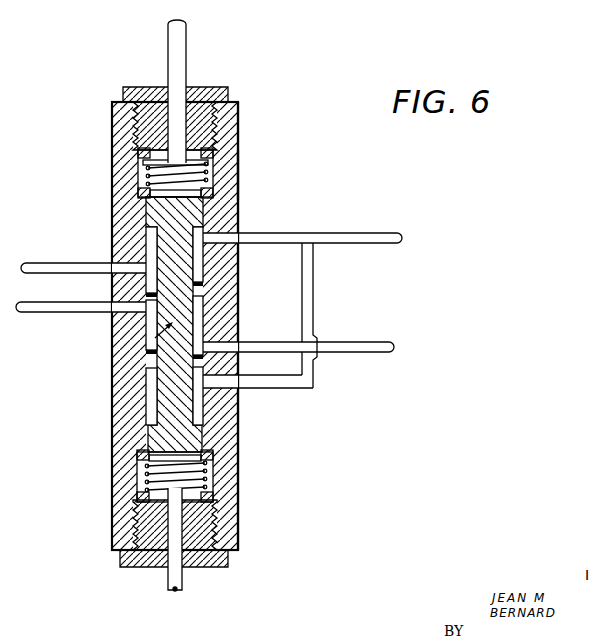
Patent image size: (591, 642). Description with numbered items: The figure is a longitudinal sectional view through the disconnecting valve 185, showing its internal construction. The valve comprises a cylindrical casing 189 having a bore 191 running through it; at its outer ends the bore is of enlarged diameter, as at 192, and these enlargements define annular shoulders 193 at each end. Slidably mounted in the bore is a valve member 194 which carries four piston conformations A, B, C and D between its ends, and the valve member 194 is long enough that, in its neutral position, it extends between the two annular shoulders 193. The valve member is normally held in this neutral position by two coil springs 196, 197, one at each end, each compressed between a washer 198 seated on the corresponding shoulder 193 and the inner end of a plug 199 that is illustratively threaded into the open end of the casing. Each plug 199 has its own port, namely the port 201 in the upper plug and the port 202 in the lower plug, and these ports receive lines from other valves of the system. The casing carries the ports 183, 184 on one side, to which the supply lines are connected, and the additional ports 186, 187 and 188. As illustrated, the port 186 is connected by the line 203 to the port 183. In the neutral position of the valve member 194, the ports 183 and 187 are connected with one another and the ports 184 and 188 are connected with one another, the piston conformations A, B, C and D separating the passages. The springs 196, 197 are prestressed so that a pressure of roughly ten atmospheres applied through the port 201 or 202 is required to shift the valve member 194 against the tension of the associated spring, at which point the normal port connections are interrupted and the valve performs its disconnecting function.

The disconnecting valve 185 is at (102, 160).
The coil spring 196 is at (228, 149).
The cylindrical casing 189 is at (238, 168).
The port 187 is at (108, 262).
The port 188 is at (110, 313).
The port 183 is at (243, 233).
The port 184 is at (240, 342).
The port 186 is at (239, 387).
The line 203 is at (311, 289).
The plug 199 is at (162, 98).
The enlarged diameter portion of bore 192 is at (137, 178).
The washer 198 is at (140, 452).
The coil spring 197 is at (214, 487).
The port 201 is at (188, 84).
The port 202 is at (172, 572).
The bore 191 is at (145, 405).
The annular shoulder 193 is at (214, 213).
The valve member 194 is at (149, 360).
The piston conformation A is at (160, 209).
The piston conformation B is at (146, 297).
The piston conformation C is at (147, 356).
The piston conformation D is at (147, 432).